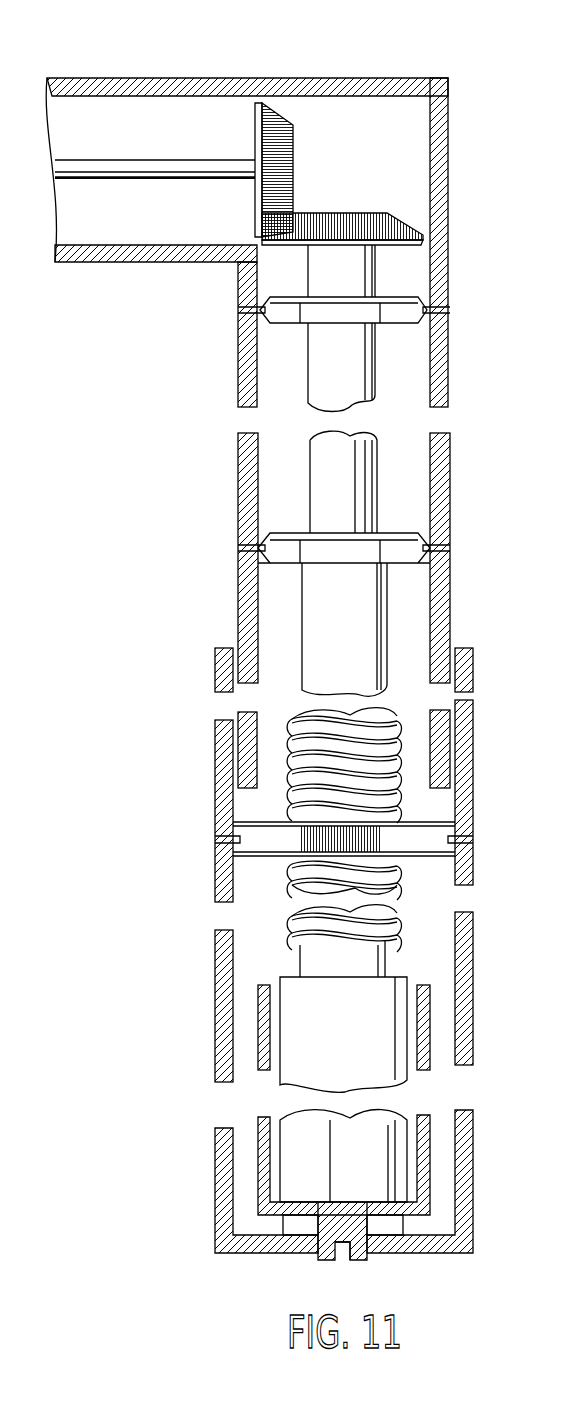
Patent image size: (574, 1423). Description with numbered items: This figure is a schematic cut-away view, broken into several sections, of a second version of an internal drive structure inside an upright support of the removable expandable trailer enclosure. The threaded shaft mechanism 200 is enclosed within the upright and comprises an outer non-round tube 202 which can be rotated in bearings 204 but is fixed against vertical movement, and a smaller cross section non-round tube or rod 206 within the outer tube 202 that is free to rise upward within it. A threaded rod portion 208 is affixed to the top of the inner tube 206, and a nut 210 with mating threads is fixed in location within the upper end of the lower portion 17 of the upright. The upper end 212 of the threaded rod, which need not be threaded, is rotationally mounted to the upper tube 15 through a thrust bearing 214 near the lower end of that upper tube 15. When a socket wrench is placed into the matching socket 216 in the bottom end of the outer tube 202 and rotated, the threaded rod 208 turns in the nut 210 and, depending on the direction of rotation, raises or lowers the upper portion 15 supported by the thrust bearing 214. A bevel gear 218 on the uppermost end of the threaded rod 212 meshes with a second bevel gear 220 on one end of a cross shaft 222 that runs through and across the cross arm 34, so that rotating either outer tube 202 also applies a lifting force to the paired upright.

The front cross arm 34 is at (98, 78).
The cross shaft 222 is at (148, 160).
The second bevel gear 220 is at (296, 138).
The bevel gear 218 is at (376, 213).
The upper telescoping portion 15 is at (450, 468).
The thrust bearing 214 is at (285, 537).
The threaded shaft mechanism 200 is at (202, 566).
The upper end of the threaded rod 212 is at (370, 618).
The lower portion 17 is at (465, 735).
The threaded rod portion 208 is at (330, 870).
The nut 210 is at (445, 841).
The inner non-round tube or rod 206 is at (395, 975).
The outer non-round tube 202 is at (430, 1150).
The bearings 204 is at (295, 1227).
The socket 216 is at (342, 1246).